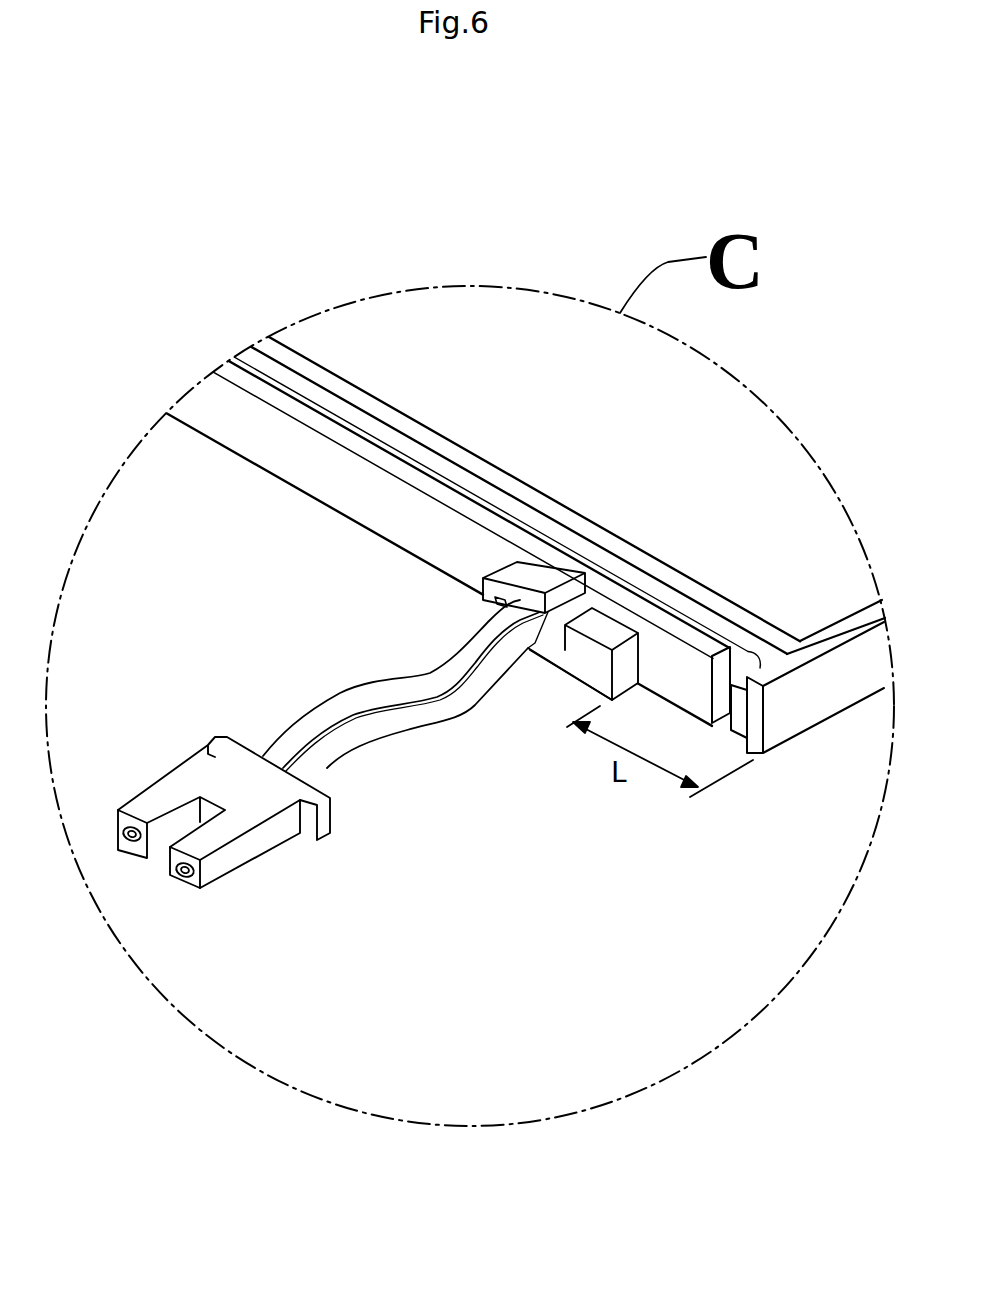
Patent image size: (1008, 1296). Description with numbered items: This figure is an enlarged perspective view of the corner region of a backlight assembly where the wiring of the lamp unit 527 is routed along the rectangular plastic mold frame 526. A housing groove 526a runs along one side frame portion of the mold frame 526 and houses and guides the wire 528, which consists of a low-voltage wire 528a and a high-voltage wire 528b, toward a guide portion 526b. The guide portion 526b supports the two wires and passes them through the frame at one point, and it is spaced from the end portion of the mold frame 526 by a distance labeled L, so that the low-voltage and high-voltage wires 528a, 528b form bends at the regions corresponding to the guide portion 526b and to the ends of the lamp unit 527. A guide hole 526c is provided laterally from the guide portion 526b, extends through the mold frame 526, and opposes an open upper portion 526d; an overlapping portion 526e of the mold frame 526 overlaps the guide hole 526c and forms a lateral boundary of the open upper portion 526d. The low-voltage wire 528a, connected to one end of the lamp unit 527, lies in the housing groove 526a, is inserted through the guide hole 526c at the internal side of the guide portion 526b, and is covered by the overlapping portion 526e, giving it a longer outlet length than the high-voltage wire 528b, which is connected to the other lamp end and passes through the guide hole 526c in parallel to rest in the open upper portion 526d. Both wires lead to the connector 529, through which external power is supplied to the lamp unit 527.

The mold frame 526 is at (300, 462).
The housing groove 526a is at (388, 441).
The guide portion 526b is at (535, 618).
The guide hole 526c is at (497, 598).
The open upper portion 526d is at (593, 580).
The overlapping portion 526e is at (517, 583).
The lamp unit 527 is at (723, 698).
The wire 528 is at (437, 728).
The low-voltage wire 528a is at (365, 700).
The high-voltage wire 528b is at (467, 707).
The connector 529 is at (250, 847).